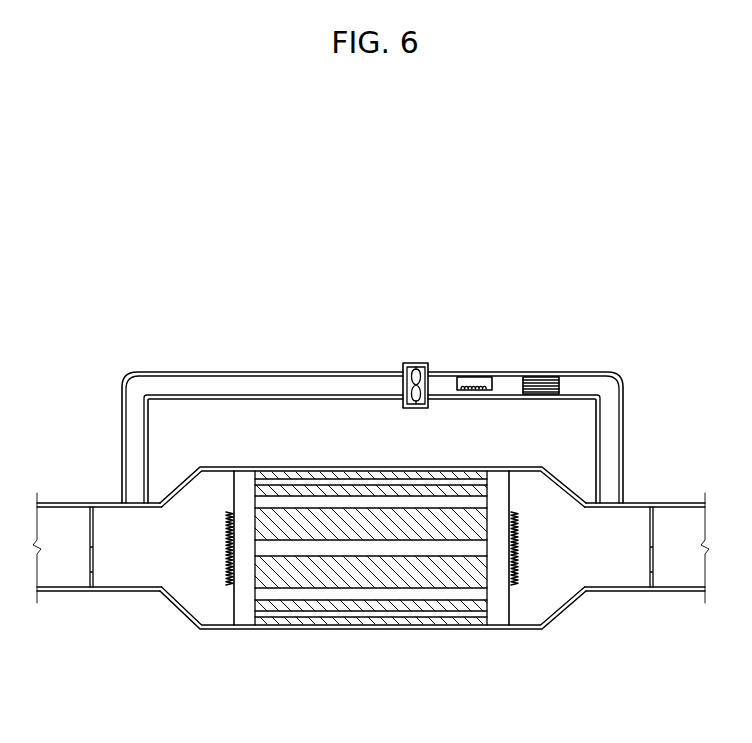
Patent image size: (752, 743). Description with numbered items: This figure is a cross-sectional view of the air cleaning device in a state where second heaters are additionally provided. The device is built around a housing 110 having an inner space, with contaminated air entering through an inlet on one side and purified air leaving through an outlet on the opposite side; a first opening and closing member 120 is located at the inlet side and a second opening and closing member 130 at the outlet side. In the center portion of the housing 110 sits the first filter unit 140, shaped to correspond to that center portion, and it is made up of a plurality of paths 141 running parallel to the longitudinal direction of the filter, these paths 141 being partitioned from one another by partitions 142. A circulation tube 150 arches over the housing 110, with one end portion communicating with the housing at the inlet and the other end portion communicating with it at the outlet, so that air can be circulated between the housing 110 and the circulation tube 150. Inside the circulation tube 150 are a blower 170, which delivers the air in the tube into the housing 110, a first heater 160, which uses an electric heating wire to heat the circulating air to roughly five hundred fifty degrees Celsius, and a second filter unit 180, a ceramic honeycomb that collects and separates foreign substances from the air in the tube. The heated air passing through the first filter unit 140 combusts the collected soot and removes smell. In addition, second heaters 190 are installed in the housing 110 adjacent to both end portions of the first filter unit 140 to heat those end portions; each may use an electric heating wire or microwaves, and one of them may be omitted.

The housing 110 is at (270, 472).
The first opening and closing member 120 is at (93, 576).
The second opening and closing member 130 is at (650, 574).
The first filter unit 140 is at (371, 517).
The paths 141 is at (375, 503).
The partitions 142 is at (408, 518).
The circulation tube 150 is at (343, 372).
The first heater 160 is at (477, 377).
The blower 170 is at (418, 364).
The second filter unit 180 is at (541, 377).
The second heaters 190 is at (227, 563).